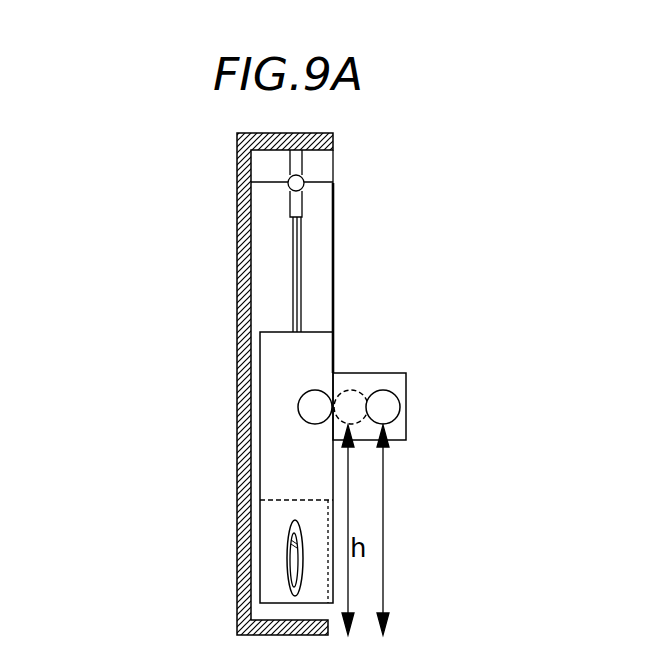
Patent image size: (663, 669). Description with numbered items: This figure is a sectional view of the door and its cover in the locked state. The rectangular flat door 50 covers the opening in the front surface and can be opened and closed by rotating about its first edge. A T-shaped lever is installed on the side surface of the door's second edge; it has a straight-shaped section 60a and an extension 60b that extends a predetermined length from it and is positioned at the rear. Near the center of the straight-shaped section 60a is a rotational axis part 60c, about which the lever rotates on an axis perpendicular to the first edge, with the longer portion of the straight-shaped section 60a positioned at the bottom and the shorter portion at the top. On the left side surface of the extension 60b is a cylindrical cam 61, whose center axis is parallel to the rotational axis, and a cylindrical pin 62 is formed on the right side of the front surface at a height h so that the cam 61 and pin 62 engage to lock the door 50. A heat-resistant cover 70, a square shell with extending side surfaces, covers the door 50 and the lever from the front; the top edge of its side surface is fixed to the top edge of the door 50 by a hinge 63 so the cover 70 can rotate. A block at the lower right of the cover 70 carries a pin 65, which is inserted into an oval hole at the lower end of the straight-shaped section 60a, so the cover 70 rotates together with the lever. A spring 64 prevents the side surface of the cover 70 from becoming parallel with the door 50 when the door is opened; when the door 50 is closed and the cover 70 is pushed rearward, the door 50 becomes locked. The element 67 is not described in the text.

The door 50 is at (335, 212).
The straight-shaped section 60a is at (310, 473).
The extension 60b is at (406, 422).
The rotational axis part 60c is at (316, 392).
The cam 61 is at (383, 404).
The pin 62 is at (352, 392).
The hinge 63 is at (288, 182).
The spring 64 is at (296, 262).
The pin 65 is at (290, 541).
The spring 67 is at (288, 578).
The heat-resistant cover 70 is at (236, 355).